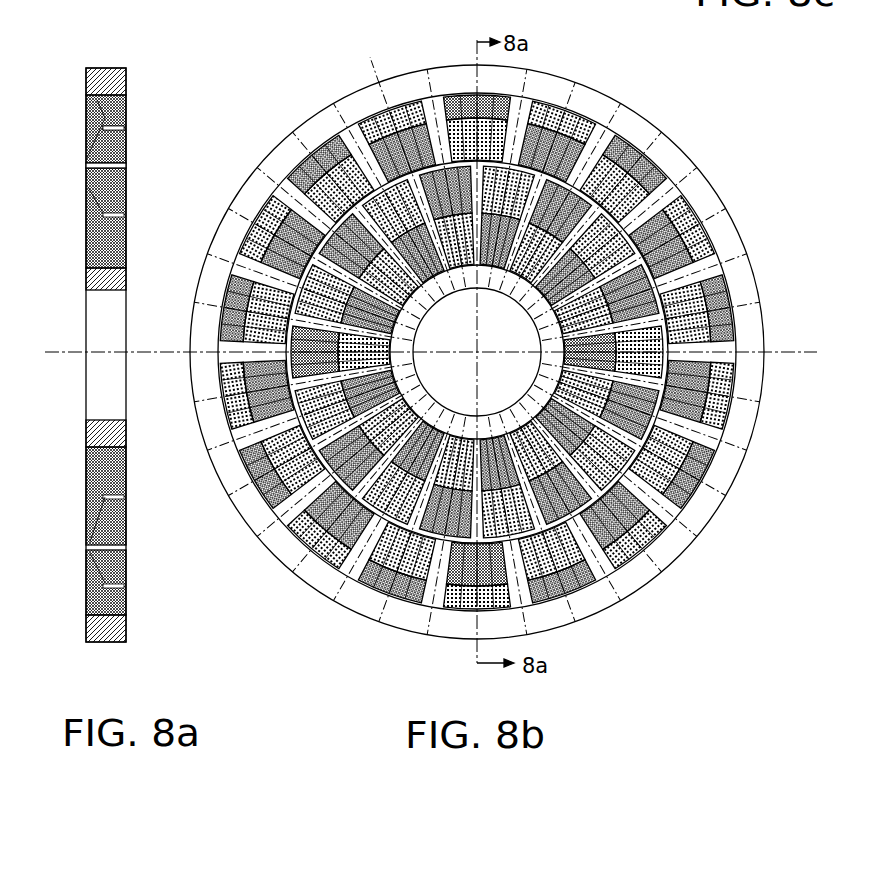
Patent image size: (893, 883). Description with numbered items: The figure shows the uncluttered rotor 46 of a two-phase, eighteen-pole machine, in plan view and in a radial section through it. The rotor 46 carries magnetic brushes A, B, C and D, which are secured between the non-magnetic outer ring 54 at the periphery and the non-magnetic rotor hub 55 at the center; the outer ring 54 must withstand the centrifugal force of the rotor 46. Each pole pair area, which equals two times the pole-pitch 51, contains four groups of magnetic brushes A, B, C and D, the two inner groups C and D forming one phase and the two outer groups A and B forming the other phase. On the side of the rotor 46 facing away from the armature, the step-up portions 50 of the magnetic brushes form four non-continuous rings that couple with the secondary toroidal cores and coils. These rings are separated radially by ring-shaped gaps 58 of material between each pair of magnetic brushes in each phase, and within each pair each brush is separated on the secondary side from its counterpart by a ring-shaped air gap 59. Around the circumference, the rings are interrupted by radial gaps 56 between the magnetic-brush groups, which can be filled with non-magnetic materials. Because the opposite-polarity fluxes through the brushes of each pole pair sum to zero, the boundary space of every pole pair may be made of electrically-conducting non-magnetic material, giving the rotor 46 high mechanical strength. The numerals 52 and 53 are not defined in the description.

In FIG. 8B, the uncluttered rotor 46 is at (446, 346).
In FIG. 8A, the step-up portions 50 is at (125, 110).
In FIG. 8B, the pole-pitch 51 is at (377, 61).
In FIG. 8B, the outer row of segments 52 is at (633, 140).
In FIG. 8B, the inner row of segments 53 is at (673, 278).
In FIG. 8A, the non-magnetic outer ring 54 is at (123, 78).
In FIG. 8B, the non-magnetic outer ring 54 is at (727, 467).
In FIG. 8A, the non-magnetic rotor hub 55 is at (125, 283).
In FIG. 8B, the non-magnetic rotor hub 55 is at (735, 393).
In FIG. 8B, the radial gaps 56 is at (608, 560).
In FIG. 8A, the ring-shaped gaps 58 is at (125, 165).
In FIG. 8B, the ring-shaped gaps 58 is at (675, 362).
In FIG. 8A, the ring-shaped air gap 59 is at (125, 128).
In FIG. 8B, the ring-shaped air gap 59 is at (735, 417).